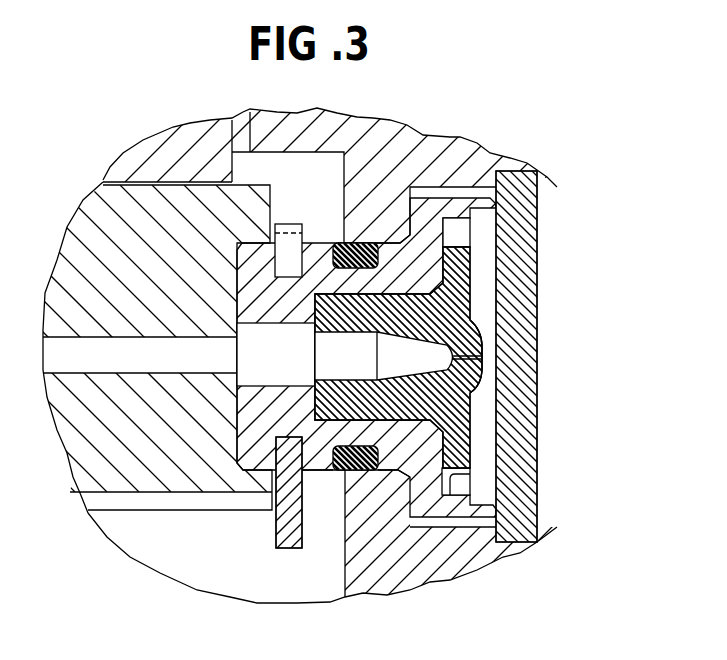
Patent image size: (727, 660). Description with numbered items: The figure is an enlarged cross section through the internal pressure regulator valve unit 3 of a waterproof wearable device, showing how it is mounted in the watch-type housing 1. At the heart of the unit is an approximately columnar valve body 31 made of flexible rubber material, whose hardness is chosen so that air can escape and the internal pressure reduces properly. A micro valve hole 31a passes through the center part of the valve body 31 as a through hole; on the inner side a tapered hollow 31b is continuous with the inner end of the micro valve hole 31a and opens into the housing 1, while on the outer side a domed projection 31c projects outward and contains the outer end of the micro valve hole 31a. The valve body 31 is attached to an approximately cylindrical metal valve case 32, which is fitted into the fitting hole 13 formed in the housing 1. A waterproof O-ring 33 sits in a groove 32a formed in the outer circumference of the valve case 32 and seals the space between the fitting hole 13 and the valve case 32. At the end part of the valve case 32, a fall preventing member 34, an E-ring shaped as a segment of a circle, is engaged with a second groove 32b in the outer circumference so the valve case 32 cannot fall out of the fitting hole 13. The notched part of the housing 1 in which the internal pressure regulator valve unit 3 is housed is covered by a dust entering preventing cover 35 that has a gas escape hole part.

The housing 1 is at (392, 143).
The internal pressure regulator valve unit 3 is at (363, 360).
The fitting hole 13 is at (407, 457).
The valve body 31 is at (453, 298).
The micro valve hole 31a is at (483, 357).
The tapered hollow 31b is at (400, 358).
The projection 31c is at (482, 377).
The valve case 32 is at (422, 253).
The groove 32a is at (360, 444).
The groove 32b is at (292, 276).
The waterproof O-ring 33 is at (341, 245).
The fall preventing member 34 is at (288, 542).
The dust entering preventing cover 35 is at (523, 220).